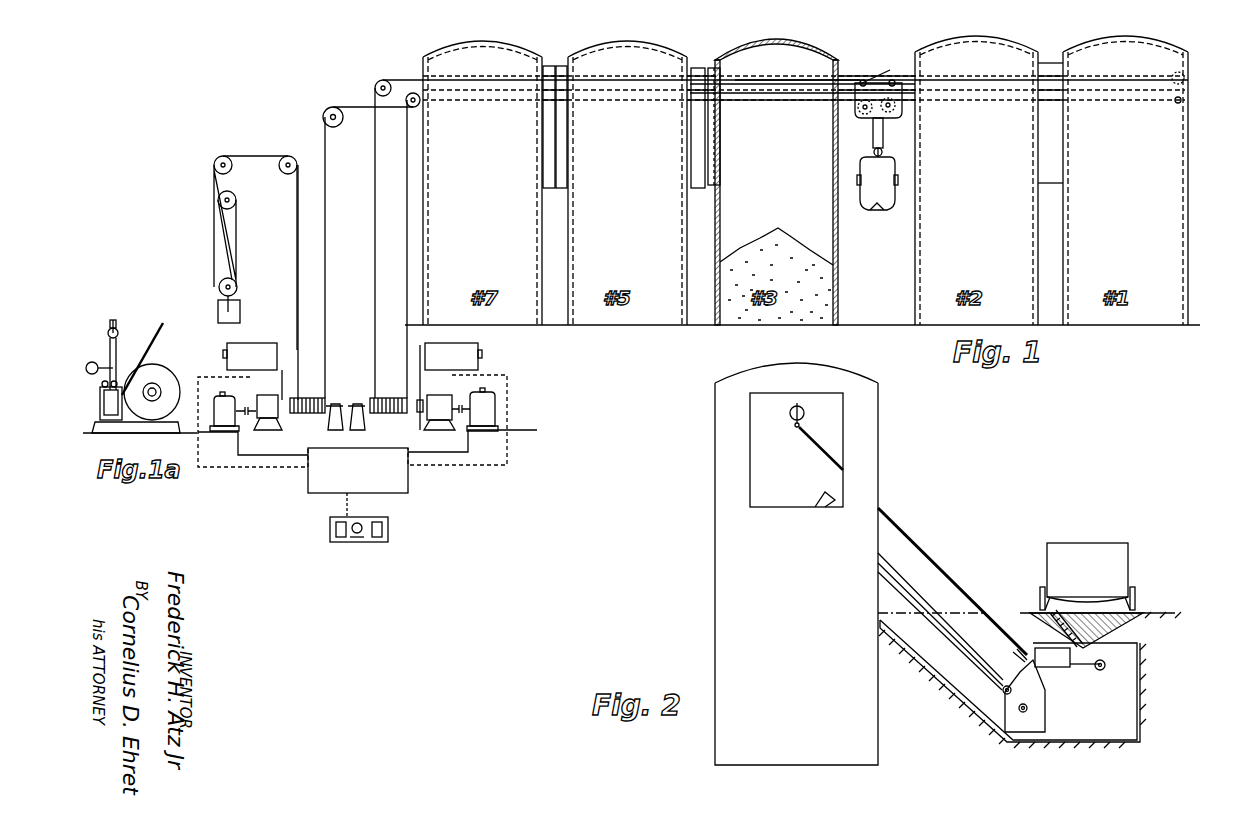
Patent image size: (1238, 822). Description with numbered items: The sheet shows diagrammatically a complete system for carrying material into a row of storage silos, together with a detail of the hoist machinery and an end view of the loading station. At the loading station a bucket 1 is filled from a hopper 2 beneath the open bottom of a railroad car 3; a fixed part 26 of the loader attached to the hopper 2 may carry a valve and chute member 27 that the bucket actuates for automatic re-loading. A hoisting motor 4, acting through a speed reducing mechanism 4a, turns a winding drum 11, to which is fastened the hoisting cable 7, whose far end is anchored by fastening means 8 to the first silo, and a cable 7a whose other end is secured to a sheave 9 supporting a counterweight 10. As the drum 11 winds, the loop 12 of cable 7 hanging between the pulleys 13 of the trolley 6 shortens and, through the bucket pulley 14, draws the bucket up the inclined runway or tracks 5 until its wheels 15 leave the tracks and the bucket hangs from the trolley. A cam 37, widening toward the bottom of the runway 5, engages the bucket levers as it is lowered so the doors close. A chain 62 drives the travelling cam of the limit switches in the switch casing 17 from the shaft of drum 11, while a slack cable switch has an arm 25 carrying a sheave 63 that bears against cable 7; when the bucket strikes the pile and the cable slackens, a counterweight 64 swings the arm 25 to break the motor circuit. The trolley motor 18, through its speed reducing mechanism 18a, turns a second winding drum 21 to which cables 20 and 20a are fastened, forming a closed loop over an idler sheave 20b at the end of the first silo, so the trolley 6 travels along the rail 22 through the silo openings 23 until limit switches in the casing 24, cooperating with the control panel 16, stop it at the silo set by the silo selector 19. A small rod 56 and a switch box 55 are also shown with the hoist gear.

In FIG. 1, the bucket 1 is at (896, 183).
In FIG. 2, the bucket 1 is at (1040, 708).
In FIG. 2, the hopper 2 is at (1145, 615).
In FIG. 2, the railroad car 3 is at (1128, 570).
In FIG. 1, the hoisting motor 4 is at (222, 400).
In FIG. 1, the speed reducing mechanism 4a is at (268, 418).
In FIG. 2, the inclined runway or tracks 5 is at (930, 628).
In FIG. 1, the travelling carriage or trolley 6 is at (882, 82).
In FIG. 1, the hoisting cable 7 is at (326, 236).
In FIG. 1A, the hoisting cable 7 is at (109, 327).
In FIG. 1, the counterweight cable 7a is at (297, 277).
In FIG. 1A, the counterweight cable 7a is at (165, 340).
In FIG. 1, the fastening means 8 is at (1181, 99).
In FIG. 1, the sheave 9 is at (220, 284).
In FIG. 1, the counterweight 10 is at (218, 318).
In FIG. 1, the winding drum 11 is at (314, 398).
In FIG. 1A, the winding drum 11 is at (160, 400).
In FIG. 1, the cable loop 12 is at (873, 136).
In FIG. 2, the cable loop 12 is at (930, 562).
In FIG. 1, the trolley pulleys 13 is at (863, 108).
In FIG. 1, the bucket pulley 14 is at (884, 148).
In FIG. 2, the bucket wheels 15 is at (1002, 688).
In FIG. 1, the control panel 16 is at (408, 488).
In FIG. 1, the switch casing 17 is at (268, 328).
In FIG. 1, the trolley motor 18 is at (485, 400).
In FIG. 1, the speed reducing mechanism 18a is at (440, 404).
In FIG. 1, the silo selector 19 is at (388, 532).
In FIG. 1, the trolley cable 20 is at (378, 200).
In FIG. 1, the trolley cable 20a is at (866, 82).
In FIG. 1, the idler sheave 20b is at (1182, 76).
In FIG. 1, the winding drum 21 is at (368, 398).
In FIG. 1, the track or rail 22 is at (786, 79).
In FIG. 2, the track or rail 22 is at (800, 408).
In FIG. 1, the silo openings 23 is at (722, 174).
In FIG. 1, the limit switch casing 24 is at (478, 351).
In FIG. 1A, the slack cable switch arm 25 is at (117, 355).
In FIG. 2, the fixed part of loader 26 is at (1050, 620).
In FIG. 2, the valve and chute member 27 is at (1068, 678).
In FIG. 2, the cam 37 is at (978, 722).
In FIG. 1A, the switch box 55 is at (100, 408).
In FIG. 1, the rod 56 is at (420, 368).
In FIG. 1, the chain 62 is at (283, 370).
In FIG. 1A, the sheave 63 is at (117, 328).
In FIG. 1A, the counterweight 64 is at (92, 362).